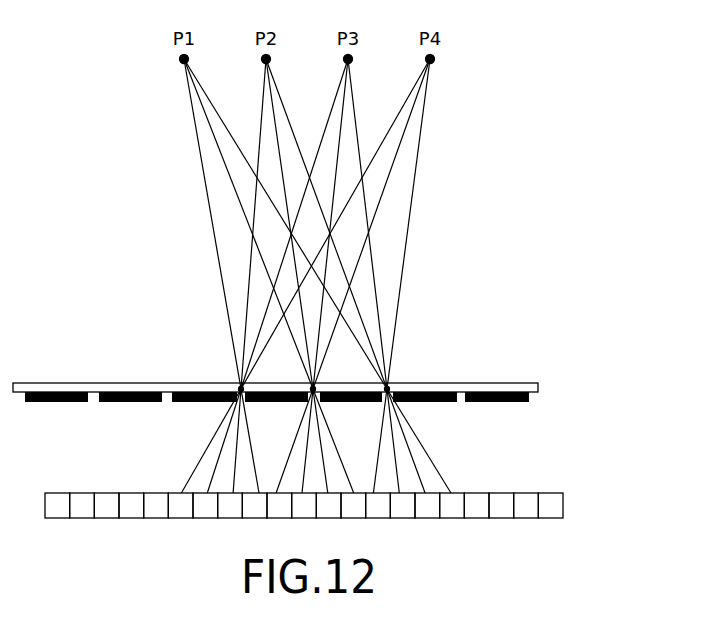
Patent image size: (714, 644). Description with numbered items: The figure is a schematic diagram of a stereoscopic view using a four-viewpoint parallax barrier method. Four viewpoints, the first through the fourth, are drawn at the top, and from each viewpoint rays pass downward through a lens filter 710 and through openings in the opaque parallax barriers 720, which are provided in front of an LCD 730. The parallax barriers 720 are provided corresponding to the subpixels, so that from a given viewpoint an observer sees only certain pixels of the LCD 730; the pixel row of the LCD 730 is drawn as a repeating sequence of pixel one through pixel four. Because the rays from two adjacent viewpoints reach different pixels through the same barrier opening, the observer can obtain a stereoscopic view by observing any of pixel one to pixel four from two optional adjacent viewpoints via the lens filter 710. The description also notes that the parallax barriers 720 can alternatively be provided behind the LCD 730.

The lens filter 710 is at (538, 387).
The parallax barriers 720 is at (529, 397).
The LCD 730 is at (563, 494).